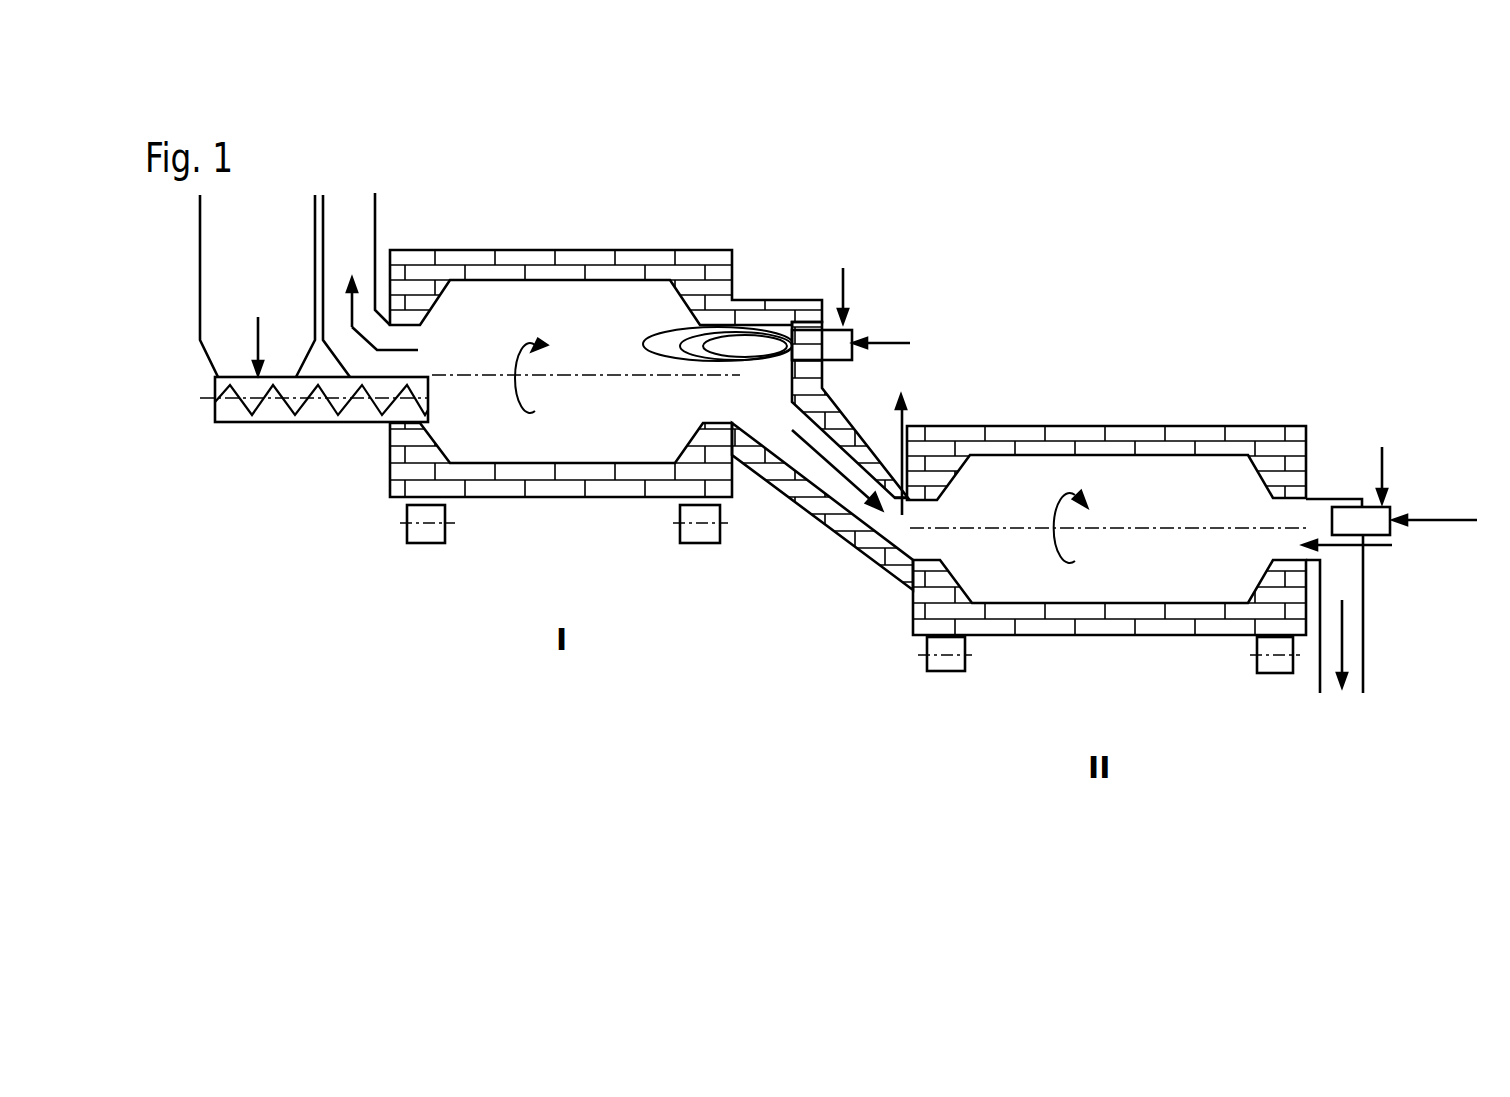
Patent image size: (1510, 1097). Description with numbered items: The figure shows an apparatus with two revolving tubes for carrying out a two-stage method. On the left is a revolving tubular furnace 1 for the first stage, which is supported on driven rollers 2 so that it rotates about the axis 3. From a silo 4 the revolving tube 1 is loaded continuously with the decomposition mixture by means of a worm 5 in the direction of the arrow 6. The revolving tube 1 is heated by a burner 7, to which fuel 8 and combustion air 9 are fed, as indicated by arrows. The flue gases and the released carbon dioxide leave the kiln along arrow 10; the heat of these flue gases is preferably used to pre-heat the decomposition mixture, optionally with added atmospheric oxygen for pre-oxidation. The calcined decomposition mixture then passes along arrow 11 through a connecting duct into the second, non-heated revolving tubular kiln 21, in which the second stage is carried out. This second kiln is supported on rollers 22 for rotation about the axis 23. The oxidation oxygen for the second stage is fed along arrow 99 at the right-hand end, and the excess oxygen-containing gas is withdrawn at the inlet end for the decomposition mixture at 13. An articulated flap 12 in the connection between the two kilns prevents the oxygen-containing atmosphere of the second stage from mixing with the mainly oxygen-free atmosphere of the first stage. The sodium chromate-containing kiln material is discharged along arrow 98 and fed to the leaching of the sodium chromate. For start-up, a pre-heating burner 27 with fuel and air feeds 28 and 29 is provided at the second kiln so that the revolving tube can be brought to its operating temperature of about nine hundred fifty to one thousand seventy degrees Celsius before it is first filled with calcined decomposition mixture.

The revolving tubular furnace 1 is at (563, 498).
The driven rollers 2 is at (427, 544).
The axis 3 is at (625, 378).
The silo 4 is at (200, 303).
The worm 5 is at (317, 423).
The arrow 6 is at (260, 328).
The burner 7 is at (835, 353).
The fuel 8 is at (895, 343).
The combustion air 9 is at (845, 290).
The arrow 10 is at (357, 332).
The arrow 11 is at (800, 497).
The articulated flap 12 is at (880, 535).
The withdrawal point for excess oxygen-containing gas 13 is at (906, 427).
The second revolving tubular kiln 21 is at (1113, 637).
The rollers 22 is at (947, 672).
The axis 23 is at (1185, 530).
The pre-heating burner 27 is at (1393, 507).
The fuel feed 28 is at (1455, 523).
The air feed 29 is at (1382, 467).
The arrow 98 is at (1343, 627).
The arrow 99 is at (1377, 548).